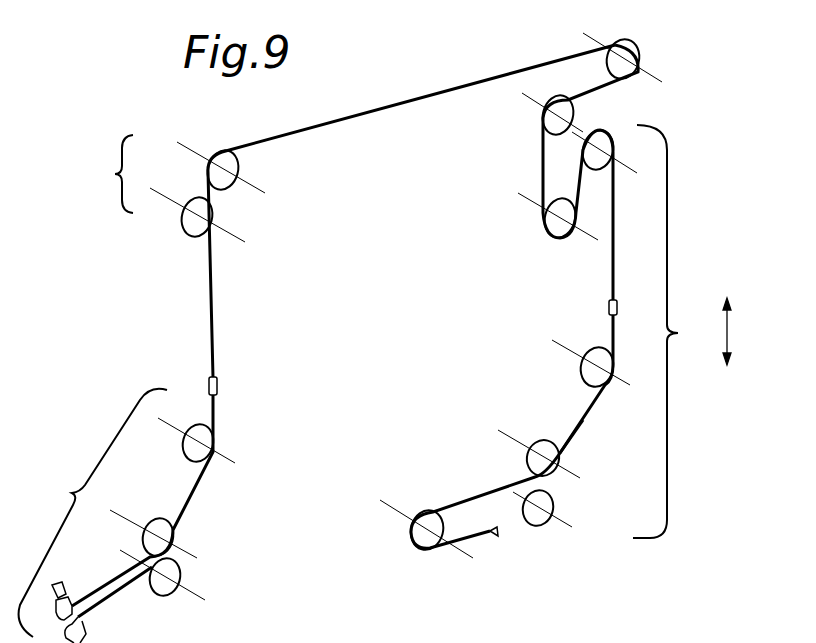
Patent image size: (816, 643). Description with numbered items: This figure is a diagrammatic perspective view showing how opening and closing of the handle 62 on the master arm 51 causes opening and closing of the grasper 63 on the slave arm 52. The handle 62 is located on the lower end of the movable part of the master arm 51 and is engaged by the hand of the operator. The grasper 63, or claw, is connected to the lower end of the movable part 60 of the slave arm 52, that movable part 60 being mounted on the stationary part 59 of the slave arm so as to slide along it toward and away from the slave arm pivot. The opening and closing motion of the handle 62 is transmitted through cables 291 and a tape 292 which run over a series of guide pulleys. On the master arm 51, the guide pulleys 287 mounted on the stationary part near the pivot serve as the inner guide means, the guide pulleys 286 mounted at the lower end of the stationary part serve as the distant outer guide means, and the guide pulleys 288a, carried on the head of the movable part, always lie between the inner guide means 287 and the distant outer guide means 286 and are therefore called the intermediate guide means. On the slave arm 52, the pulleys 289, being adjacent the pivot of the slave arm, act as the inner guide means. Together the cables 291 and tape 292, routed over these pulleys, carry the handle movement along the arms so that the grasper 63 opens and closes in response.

The tape 292 is at (392, 106).
The guide pulleys 287 is at (622, 72).
The guide pulleys 288a is at (598, 158).
The guide pulleys 286 is at (545, 228).
The pulleys 289 is at (228, 178).
The stationary part 59 is at (102, 174).
The slave arm 52 is at (222, 348).
The master arm 51 is at (516, 316).
The handle 62 is at (473, 489).
The cables 291 is at (583, 420).
The movable part 60 is at (127, 513).
The grasper 63 is at (79, 590).